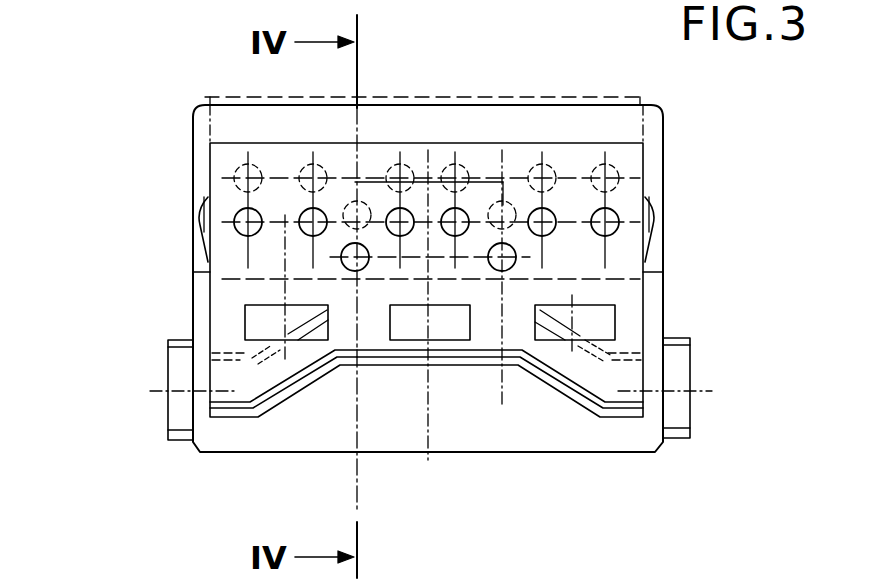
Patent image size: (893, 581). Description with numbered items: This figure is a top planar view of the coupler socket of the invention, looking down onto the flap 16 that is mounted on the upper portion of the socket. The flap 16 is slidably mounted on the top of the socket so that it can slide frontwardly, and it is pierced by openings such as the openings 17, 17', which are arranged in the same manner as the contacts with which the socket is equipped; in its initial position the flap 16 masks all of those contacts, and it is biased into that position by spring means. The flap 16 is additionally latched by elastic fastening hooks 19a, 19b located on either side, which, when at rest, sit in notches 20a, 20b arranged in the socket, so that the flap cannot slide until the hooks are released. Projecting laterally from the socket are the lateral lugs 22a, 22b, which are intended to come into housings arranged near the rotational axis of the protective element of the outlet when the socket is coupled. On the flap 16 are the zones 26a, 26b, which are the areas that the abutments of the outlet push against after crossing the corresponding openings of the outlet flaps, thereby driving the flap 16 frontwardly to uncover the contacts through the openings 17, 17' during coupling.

The flap 16 is at (627, 190).
The opening 17 is at (475, 185).
The opening 17' is at (434, 133).
The elastic fastening hook 19a is at (193, 223).
The elastic fastening hook 19b is at (662, 223).
The notch 20a is at (203, 257).
The notch 20b is at (655, 262).
The lateral lug 22a is at (167, 375).
The lateral lug 22b is at (692, 372).
The zone of the flap 26a is at (357, 357).
The zone of the flap 26b is at (503, 350).